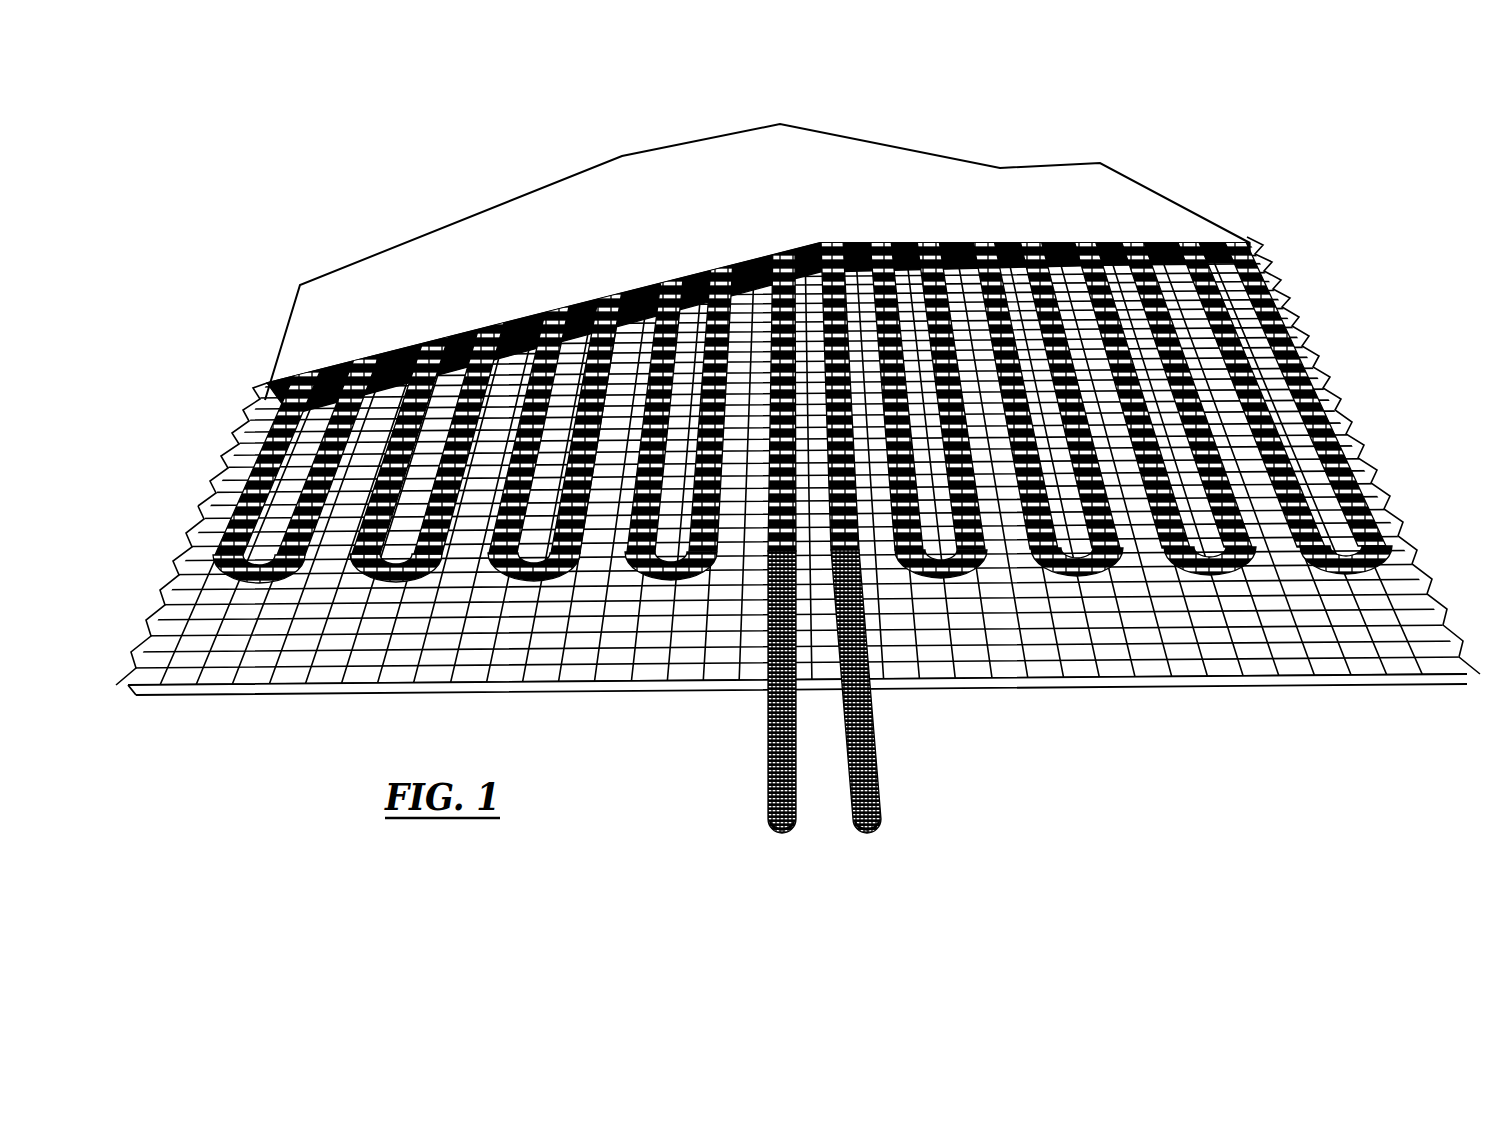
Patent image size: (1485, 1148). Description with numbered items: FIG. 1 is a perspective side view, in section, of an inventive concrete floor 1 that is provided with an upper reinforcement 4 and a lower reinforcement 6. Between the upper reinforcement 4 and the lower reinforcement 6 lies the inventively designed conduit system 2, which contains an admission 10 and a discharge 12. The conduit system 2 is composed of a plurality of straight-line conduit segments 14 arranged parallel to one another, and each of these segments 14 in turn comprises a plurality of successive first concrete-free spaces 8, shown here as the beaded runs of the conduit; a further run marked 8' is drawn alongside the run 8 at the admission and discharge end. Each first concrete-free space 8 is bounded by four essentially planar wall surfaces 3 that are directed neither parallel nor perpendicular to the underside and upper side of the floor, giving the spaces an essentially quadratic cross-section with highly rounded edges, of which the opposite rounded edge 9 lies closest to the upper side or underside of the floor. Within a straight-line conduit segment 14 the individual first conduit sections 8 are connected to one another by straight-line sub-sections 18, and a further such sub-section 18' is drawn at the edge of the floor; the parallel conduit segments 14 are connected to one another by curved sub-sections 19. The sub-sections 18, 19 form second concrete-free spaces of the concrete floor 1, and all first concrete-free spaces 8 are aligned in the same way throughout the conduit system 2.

The concrete floor 1 is at (1113, 205).
The conduit system 2 is at (380, 592).
The planar wall surfaces 3 is at (1160, 557).
The upper reinforcement 4 is at (1207, 243).
The lower reinforcement 6 is at (1230, 652).
The first concrete-free spaces 8 is at (749, 536).
The outlet tube 8' is at (843, 536).
The rounded edge 9 is at (1350, 440).
The admission 10 is at (782, 835).
The discharge 12 is at (875, 835).
The straight-line conduit segments 14 is at (1278, 577).
The straight-line sub-sections 18 is at (170, 585).
The wire end 18' is at (203, 444).
The curved sub-sections 19 is at (906, 582).